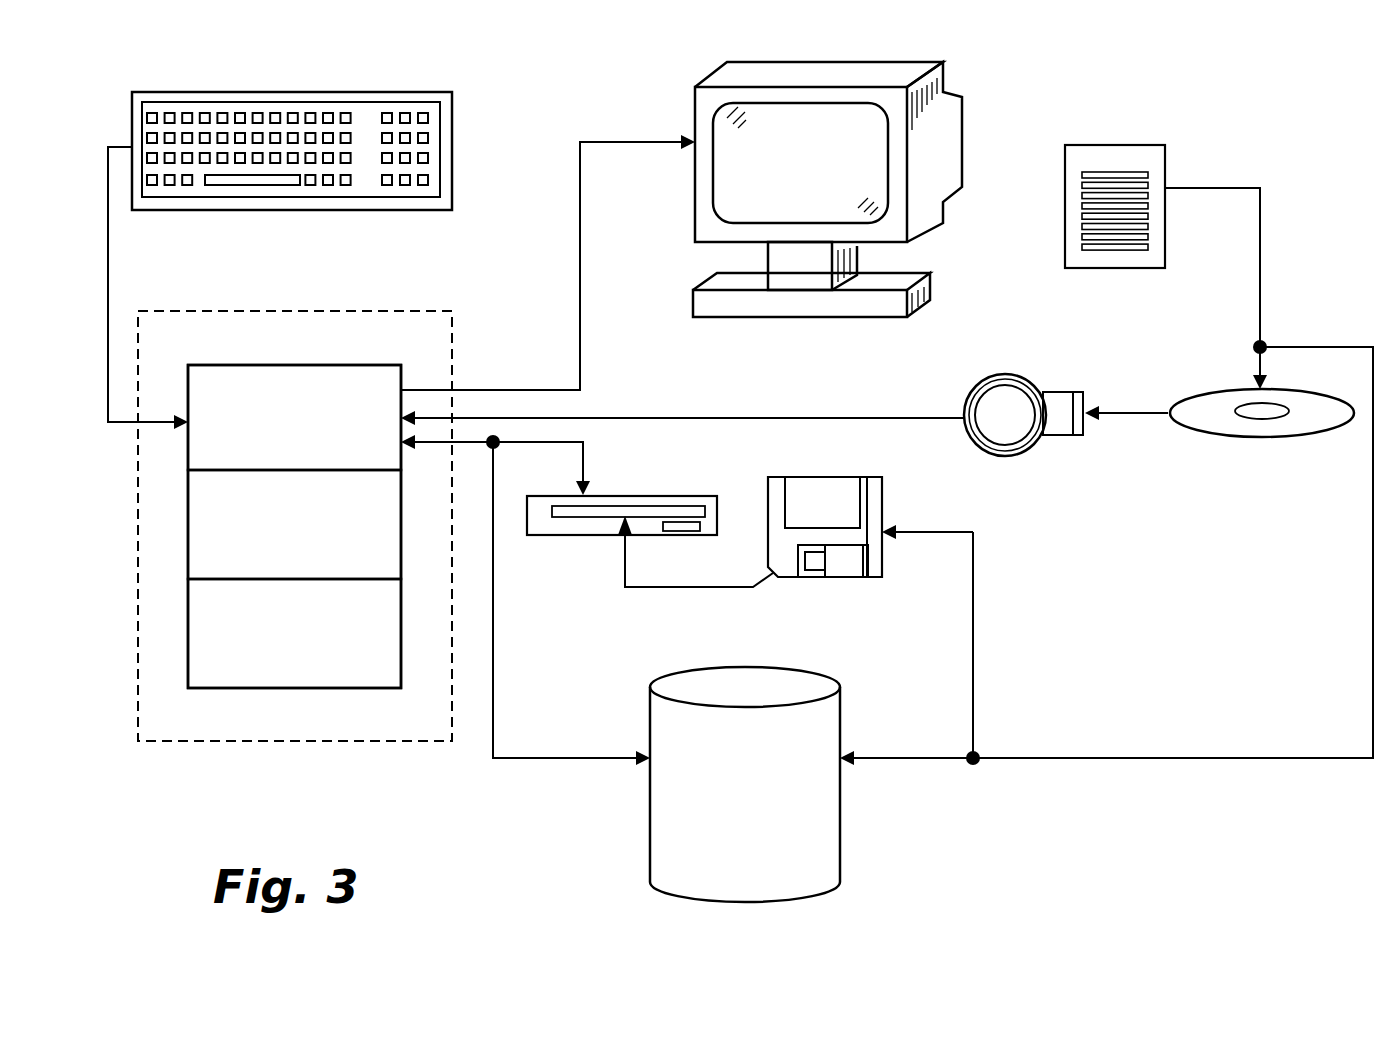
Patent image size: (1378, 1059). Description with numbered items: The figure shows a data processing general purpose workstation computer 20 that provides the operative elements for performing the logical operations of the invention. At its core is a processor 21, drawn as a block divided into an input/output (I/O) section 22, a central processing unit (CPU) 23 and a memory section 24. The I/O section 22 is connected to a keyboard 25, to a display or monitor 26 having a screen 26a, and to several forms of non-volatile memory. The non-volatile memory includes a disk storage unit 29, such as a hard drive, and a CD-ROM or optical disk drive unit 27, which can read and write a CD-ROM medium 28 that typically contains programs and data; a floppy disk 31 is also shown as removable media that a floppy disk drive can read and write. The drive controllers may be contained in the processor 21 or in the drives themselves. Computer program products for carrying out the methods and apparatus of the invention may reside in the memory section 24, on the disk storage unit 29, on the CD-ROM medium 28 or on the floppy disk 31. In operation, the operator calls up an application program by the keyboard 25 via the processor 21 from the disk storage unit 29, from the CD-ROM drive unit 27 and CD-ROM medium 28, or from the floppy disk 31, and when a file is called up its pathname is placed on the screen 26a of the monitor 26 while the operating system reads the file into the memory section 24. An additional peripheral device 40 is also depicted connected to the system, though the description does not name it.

The data processing general purpose workstation computer 20 is at (1085, 655).
The processor 21 is at (403, 311).
The input/output (I/O) section 22 is at (272, 369).
The central processing unit (CPU) 23 is at (403, 539).
The memory section 24 is at (403, 670).
The keyboard 25 is at (431, 92).
The display or monitor 26 is at (721, 210).
The screen 26a is at (743, 175).
The CD-ROM or optical disk drive unit 27 is at (997, 427).
The CD-ROM medium 28 is at (1237, 393).
The disk storage unit 29 is at (842, 788).
The floppy disk 31 is at (768, 275).
The printer 40 is at (1090, 145).